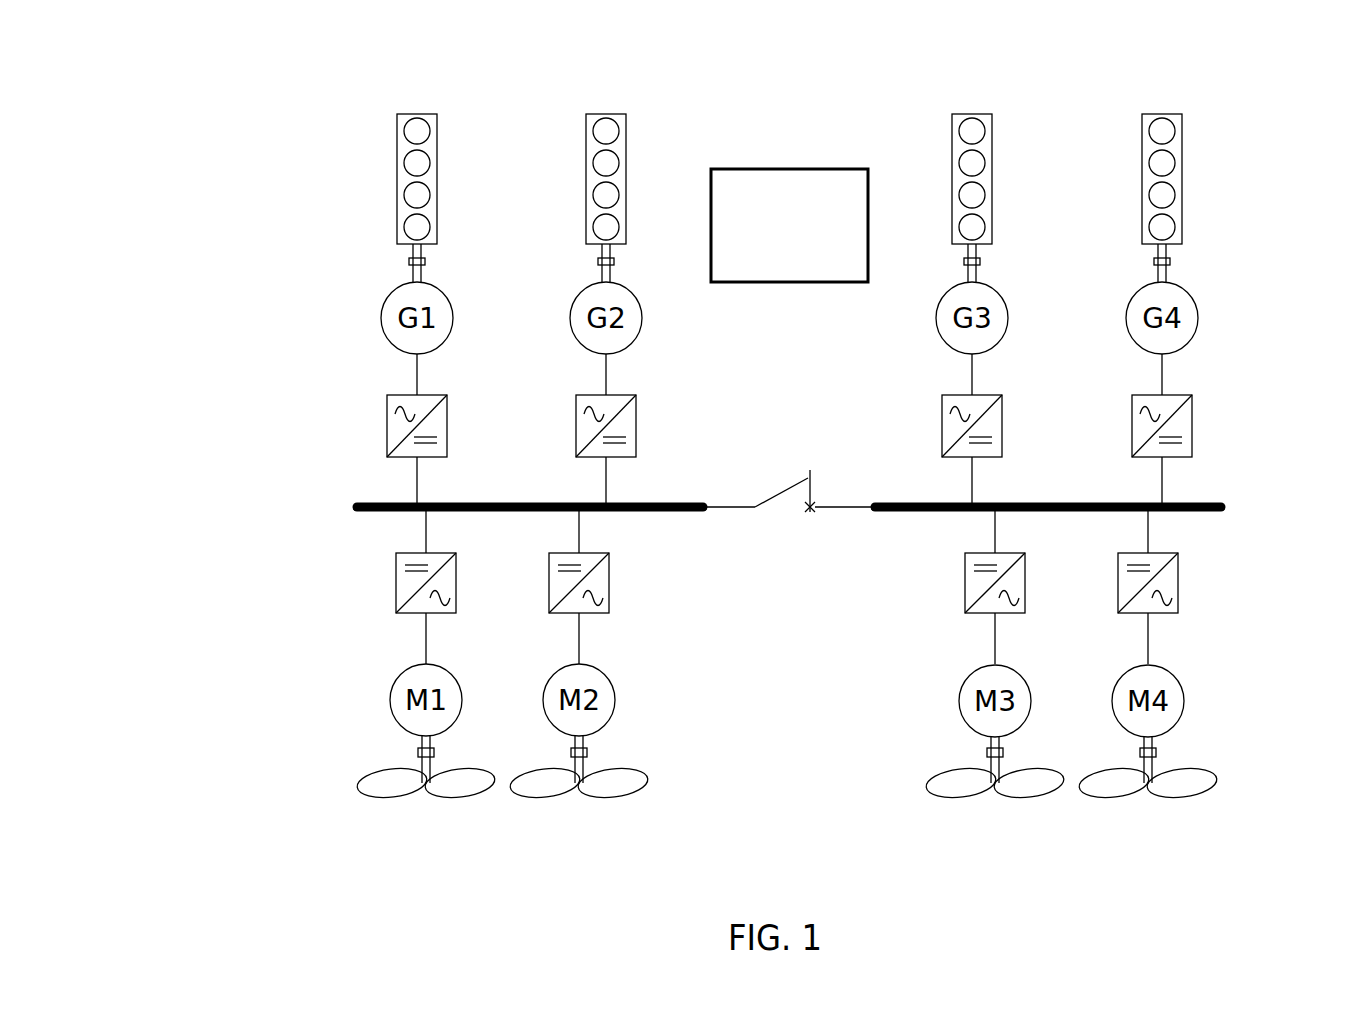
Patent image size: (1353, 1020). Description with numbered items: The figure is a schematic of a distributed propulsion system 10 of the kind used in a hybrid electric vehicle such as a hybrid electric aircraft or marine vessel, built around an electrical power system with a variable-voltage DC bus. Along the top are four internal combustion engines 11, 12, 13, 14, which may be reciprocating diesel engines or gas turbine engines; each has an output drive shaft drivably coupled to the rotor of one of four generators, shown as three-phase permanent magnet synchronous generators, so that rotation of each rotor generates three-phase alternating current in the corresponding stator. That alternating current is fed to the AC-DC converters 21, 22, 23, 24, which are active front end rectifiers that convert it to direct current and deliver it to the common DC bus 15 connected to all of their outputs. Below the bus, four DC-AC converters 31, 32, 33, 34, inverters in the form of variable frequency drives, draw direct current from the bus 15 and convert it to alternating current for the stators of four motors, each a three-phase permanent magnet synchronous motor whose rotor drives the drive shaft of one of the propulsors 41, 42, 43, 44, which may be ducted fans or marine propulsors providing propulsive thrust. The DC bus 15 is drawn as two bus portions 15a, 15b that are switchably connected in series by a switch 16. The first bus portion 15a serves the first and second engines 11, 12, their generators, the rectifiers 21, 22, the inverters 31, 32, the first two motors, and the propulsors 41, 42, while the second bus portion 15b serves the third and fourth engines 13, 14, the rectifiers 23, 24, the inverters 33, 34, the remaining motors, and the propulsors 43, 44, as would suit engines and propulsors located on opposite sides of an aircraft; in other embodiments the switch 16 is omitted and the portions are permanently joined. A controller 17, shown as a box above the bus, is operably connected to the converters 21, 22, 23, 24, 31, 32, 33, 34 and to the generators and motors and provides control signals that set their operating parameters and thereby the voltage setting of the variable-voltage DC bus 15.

The distributed propulsion system 10 is at (287, 268).
The internal combustion engine 11 is at (425, 110).
The internal combustion engine 12 is at (614, 110).
The internal combustion engine 13 is at (973, 110).
The internal combustion engine 14 is at (1163, 110).
The DC bus 15 is at (714, 470).
The first bus portion 15a is at (680, 500).
The second bus portion 15b is at (890, 500).
The switch 16 is at (798, 485).
The controller 17 is at (770, 239).
The AC-DC converter 21 is at (386, 417).
The AC-DC converter 22 is at (576, 417).
The AC-DC converter 23 is at (1002, 422).
The AC-DC converter 24 is at (1192, 422).
The DC-AC converter 31 is at (396, 600).
The DC-AC converter 32 is at (609, 590).
The DC-AC converter 33 is at (965, 583).
The DC-AC converter 34 is at (1178, 583).
The propulsor 41 is at (362, 796).
The propulsor 42 is at (517, 796).
The propulsor 43 is at (950, 800).
The propulsor 44 is at (1094, 796).